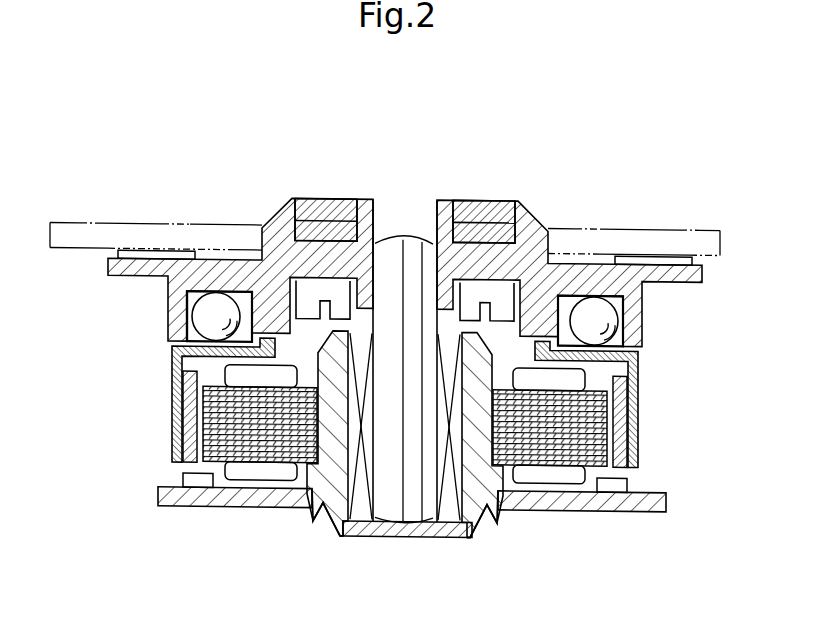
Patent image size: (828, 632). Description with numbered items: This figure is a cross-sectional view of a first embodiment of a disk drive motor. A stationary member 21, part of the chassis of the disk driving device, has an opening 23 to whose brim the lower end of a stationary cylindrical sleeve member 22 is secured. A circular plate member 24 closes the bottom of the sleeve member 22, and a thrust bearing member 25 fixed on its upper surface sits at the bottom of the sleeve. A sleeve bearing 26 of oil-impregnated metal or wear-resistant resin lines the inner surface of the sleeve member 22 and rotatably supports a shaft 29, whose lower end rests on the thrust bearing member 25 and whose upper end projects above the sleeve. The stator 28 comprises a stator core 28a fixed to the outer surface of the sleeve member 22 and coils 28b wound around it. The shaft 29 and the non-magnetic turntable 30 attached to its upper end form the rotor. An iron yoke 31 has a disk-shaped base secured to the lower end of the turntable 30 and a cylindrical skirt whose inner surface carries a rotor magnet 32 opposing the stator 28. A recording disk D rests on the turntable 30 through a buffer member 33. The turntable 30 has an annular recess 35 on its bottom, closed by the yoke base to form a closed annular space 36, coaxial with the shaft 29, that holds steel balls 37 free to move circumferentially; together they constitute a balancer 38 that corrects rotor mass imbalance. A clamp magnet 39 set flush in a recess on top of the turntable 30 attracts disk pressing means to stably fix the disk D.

The recording disk D is at (100, 225).
The stationary member 21 is at (635, 507).
The sleeve member 22 is at (287, 507).
The opening 23 is at (490, 502).
The circular plate member 24 is at (442, 536).
The thrust bearing member 25 is at (397, 537).
The sleeve bearing 26 is at (358, 534).
The stator 28 is at (596, 371).
The stator core 28a is at (203, 425).
The coils 28b is at (233, 377).
The shaft 29 is at (412, 238).
The turntable 30 is at (528, 214).
The yoke 31 is at (643, 413).
The rotor magnet 32 is at (172, 440).
The buffer member 33 is at (155, 253).
The annular recess 35 is at (230, 292).
The annular space 36 is at (568, 297).
The balls 37 is at (203, 320).
The balancer 38 is at (186, 330).
The clamp magnet 39 is at (322, 215).